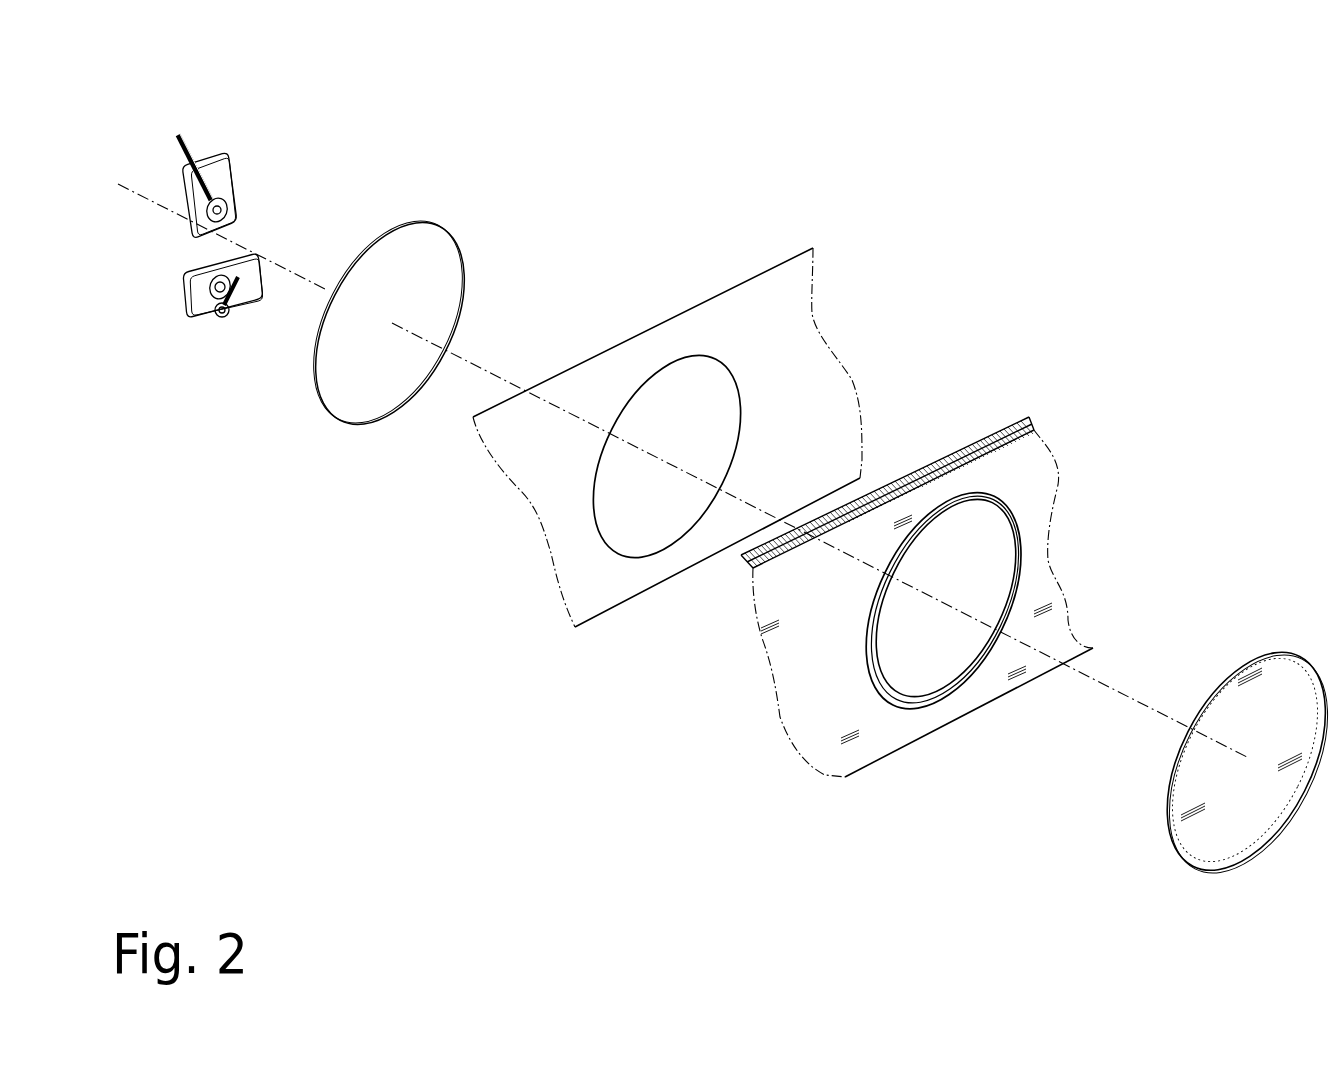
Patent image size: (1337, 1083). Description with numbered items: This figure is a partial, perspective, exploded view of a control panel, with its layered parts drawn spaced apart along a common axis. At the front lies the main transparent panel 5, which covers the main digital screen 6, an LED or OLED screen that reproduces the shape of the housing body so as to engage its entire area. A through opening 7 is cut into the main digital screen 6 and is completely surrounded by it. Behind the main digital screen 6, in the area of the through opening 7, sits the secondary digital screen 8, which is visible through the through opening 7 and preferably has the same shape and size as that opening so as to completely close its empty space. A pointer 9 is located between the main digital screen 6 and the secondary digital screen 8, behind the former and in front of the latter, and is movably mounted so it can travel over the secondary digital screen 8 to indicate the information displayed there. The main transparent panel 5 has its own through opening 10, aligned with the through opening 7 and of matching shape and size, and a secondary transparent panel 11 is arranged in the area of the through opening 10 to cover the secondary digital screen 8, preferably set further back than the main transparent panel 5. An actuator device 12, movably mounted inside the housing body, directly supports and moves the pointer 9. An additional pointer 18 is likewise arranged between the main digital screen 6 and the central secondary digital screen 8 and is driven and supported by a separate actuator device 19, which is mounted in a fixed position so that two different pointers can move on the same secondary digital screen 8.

The main transparent panel 5 is at (832, 713).
The main digital screen 6 is at (768, 310).
The through opening 7 is at (663, 541).
The secondary digital screen 8 is at (385, 297).
The pointer 9 is at (180, 132).
The through opening 10 is at (912, 696).
The secondary transparent panel 11 is at (1233, 802).
The actuator device 12 is at (222, 150).
The additional pointer 18 is at (237, 290).
The actuator device 19 is at (200, 295).